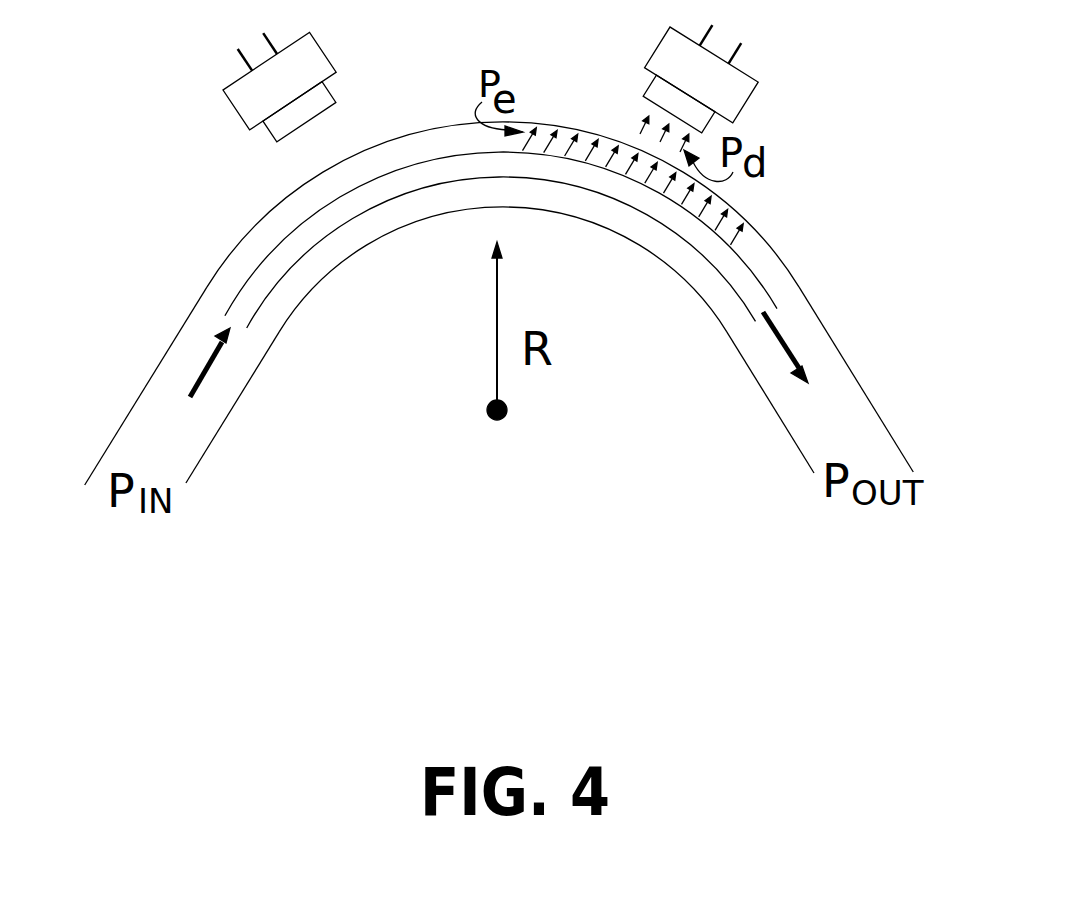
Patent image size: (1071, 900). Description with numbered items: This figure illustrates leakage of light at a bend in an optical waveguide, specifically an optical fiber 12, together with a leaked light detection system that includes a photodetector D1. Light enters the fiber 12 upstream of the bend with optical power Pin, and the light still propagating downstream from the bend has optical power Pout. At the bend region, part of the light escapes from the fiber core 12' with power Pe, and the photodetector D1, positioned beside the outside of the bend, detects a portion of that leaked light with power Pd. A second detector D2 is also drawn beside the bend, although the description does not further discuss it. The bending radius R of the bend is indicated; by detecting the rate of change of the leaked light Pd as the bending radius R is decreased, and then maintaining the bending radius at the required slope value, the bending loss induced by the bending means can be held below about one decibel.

The optical fiber 12 is at (466, 303).
The fiber core 12' is at (433, 240).
The photodetector D1 is at (729, 79).
The second detector D2 is at (255, 81).